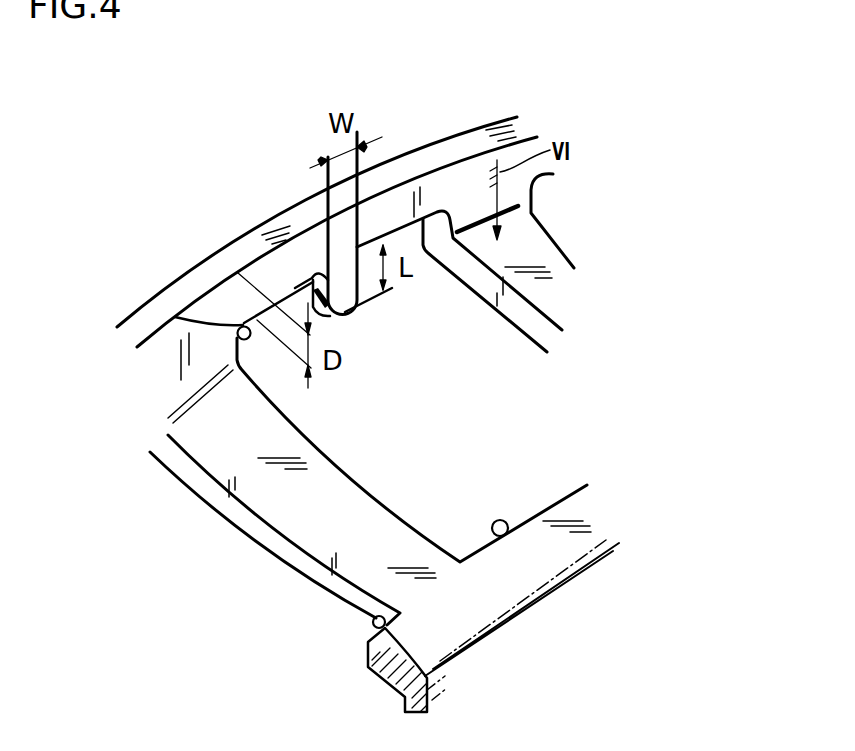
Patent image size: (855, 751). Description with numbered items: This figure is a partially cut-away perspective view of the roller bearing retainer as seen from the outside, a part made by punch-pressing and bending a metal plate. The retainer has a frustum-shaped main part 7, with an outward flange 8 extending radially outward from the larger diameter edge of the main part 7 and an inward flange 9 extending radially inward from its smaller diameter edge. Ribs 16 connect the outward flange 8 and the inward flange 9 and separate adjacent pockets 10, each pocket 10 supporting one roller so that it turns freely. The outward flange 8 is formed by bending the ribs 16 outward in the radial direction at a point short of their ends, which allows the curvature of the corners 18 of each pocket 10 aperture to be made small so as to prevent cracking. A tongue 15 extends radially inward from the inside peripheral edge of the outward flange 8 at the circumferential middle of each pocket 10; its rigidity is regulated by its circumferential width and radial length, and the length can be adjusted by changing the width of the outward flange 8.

The main part 7 is at (290, 530).
The outward flange 8 is at (474, 173).
The inward flange 9 is at (527, 620).
The pocket 10 is at (508, 530).
The tongue 15 is at (345, 314).
The rib 16 is at (553, 252).
The corner 18 is at (175, 317).